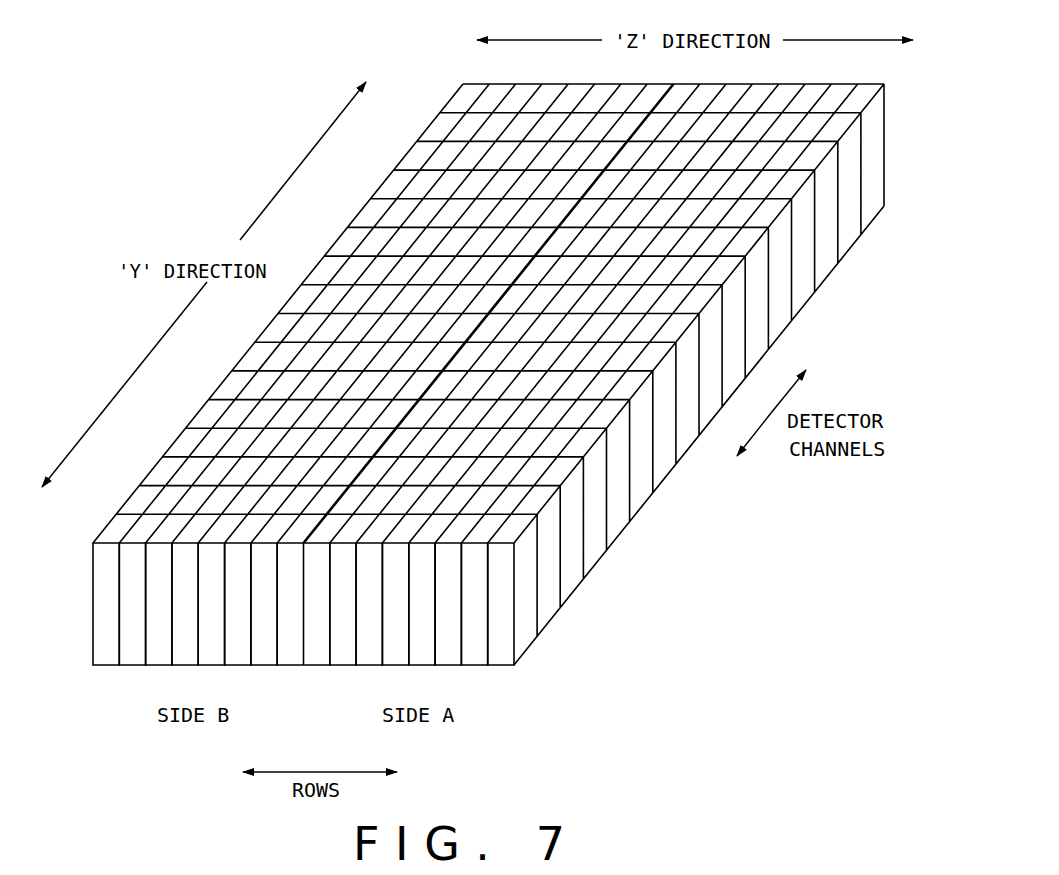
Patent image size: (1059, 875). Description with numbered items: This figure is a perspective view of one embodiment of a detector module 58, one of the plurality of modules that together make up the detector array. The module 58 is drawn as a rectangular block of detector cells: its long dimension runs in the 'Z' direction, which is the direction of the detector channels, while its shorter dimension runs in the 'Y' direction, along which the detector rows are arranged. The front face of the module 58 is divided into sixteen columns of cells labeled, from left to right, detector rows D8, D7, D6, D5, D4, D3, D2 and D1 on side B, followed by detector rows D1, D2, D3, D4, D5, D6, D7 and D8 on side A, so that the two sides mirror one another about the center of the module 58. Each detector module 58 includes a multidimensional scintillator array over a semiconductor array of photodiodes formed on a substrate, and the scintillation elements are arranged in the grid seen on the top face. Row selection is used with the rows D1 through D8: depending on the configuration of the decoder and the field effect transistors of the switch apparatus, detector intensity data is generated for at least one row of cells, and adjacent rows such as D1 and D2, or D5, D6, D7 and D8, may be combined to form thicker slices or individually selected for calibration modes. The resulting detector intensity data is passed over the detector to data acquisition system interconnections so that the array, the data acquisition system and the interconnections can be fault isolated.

The detector module 58 is at (488, 390).
The detector row D1 is at (304, 617).
The detector row D2 is at (303, 620).
The detector row D3 is at (304, 617).
The detector row D4 is at (303, 620).
The detector row D5 is at (303, 617).
The detector row D6 is at (304, 620).
The detector row D7 is at (303, 617).
The detector row D8 is at (303, 620).